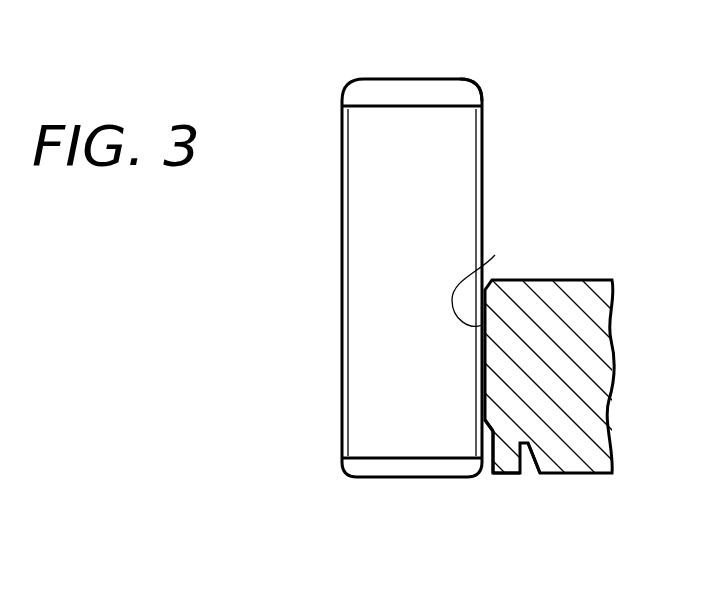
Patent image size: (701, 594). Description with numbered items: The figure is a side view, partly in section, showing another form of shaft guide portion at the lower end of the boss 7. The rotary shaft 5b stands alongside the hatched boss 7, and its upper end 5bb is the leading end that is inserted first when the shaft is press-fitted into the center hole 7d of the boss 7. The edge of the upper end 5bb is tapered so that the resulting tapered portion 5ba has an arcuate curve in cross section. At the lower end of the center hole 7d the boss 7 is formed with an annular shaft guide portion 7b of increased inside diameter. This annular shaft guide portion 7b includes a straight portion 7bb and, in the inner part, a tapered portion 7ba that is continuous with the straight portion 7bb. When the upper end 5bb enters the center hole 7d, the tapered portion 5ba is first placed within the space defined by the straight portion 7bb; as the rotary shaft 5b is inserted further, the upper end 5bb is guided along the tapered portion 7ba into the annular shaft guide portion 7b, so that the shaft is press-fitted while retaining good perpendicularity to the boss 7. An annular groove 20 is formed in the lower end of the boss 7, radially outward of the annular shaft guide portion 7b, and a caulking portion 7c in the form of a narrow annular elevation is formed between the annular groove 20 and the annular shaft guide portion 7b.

The rotary shaft 5b is at (353, 252).
The upper end of the rotary shaft 5bb is at (391, 78).
The tapered portion 5ba is at (481, 86).
The boss 7 is at (582, 292).
The center hole 7d is at (495, 255).
The tapered portion 7ba is at (487, 426).
The straight portion 7bb is at (493, 455).
The annular shaft guide portion 7b is at (485, 470).
The caulking portion 7c is at (498, 474).
The annular groove 20 is at (528, 472).